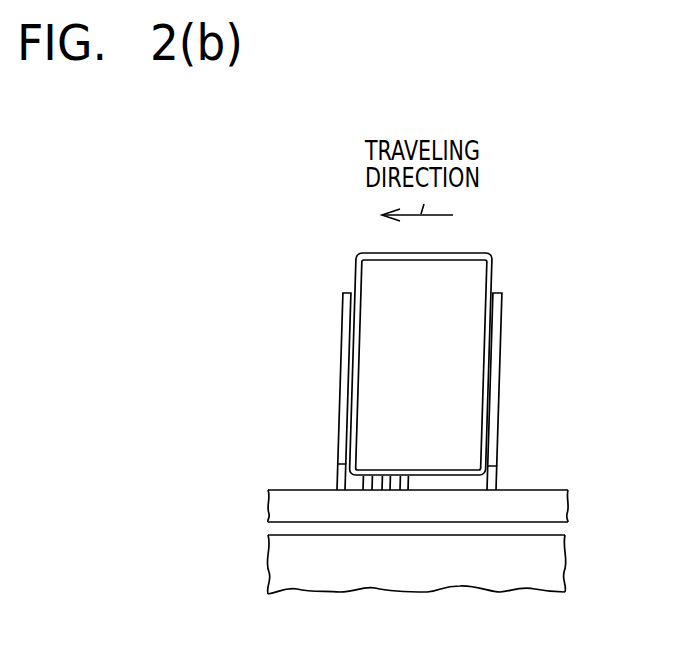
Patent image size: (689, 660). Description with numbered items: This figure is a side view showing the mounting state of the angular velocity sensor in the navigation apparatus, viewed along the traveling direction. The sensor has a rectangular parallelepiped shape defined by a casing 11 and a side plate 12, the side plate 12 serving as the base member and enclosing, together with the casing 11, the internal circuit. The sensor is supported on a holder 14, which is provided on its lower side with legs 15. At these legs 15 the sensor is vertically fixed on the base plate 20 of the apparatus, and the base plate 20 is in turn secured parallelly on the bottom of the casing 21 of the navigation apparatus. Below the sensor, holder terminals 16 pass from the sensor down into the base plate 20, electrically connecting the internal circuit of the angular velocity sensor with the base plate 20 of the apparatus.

The casing 11 is at (421, 365).
The side plate 12 is at (420, 364).
The holder 14 is at (420, 379).
The legs 15 is at (417, 477).
The holder terminals 16 is at (385, 483).
The base plate 20 is at (561, 502).
The casing 21 is at (552, 565).